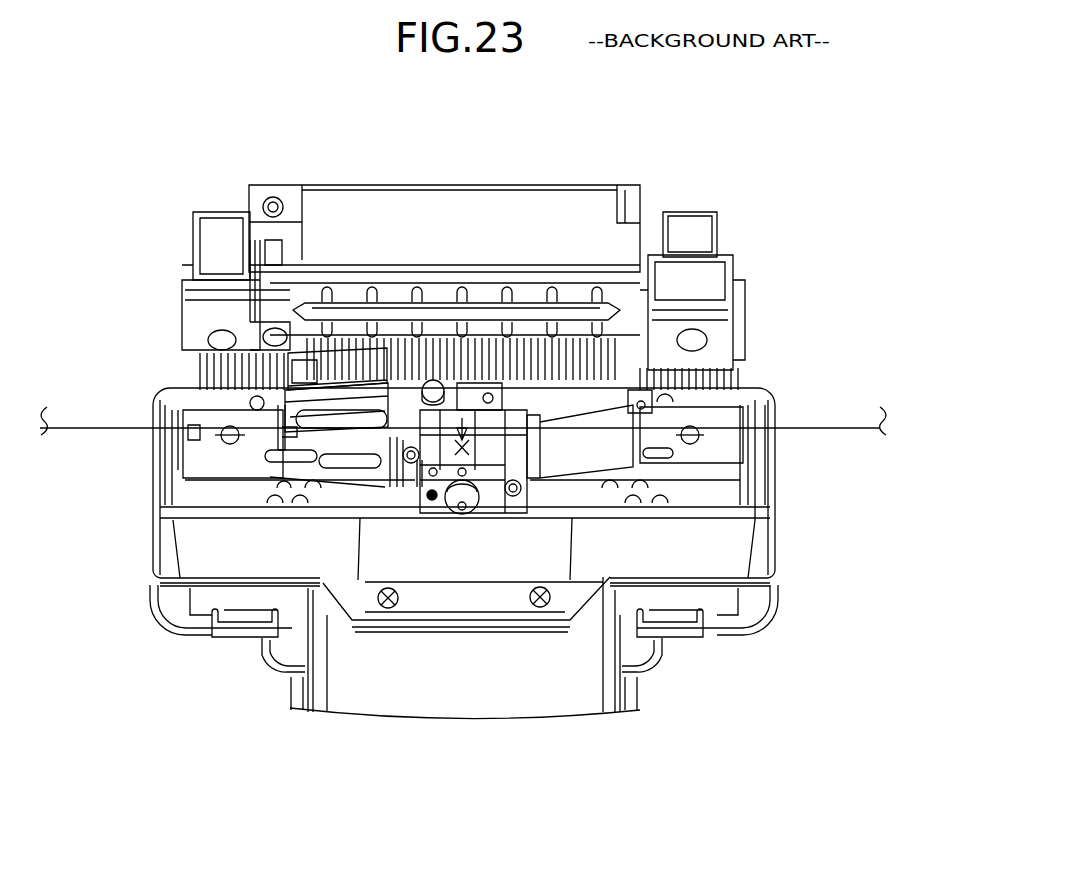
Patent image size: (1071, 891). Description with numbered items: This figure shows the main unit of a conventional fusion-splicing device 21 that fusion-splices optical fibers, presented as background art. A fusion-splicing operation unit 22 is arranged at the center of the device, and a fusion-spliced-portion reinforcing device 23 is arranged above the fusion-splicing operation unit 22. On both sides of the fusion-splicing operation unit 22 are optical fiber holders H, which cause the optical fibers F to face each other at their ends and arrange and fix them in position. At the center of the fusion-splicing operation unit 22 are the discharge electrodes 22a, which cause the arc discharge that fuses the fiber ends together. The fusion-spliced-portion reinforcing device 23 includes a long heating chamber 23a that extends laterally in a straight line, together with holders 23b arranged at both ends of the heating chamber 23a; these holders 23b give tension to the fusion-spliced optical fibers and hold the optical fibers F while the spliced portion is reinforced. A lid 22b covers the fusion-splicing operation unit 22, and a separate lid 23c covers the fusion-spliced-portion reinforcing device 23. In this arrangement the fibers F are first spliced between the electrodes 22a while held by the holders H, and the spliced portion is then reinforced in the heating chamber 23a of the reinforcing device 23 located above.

The fusion-splicing device 21 is at (170, 176).
The fusion-splicing operation unit 22 is at (763, 377).
The discharge electrodes 22a is at (468, 385).
The lid 22b is at (472, 548).
The fusion-spliced-portion reinforcing device 23 is at (648, 200).
The heating chamber 23a is at (398, 320).
The holders 23b is at (192, 318).
The lid 23c is at (447, 228).
The optical fibers F is at (94, 428).
The optical fiber holders H is at (307, 445).